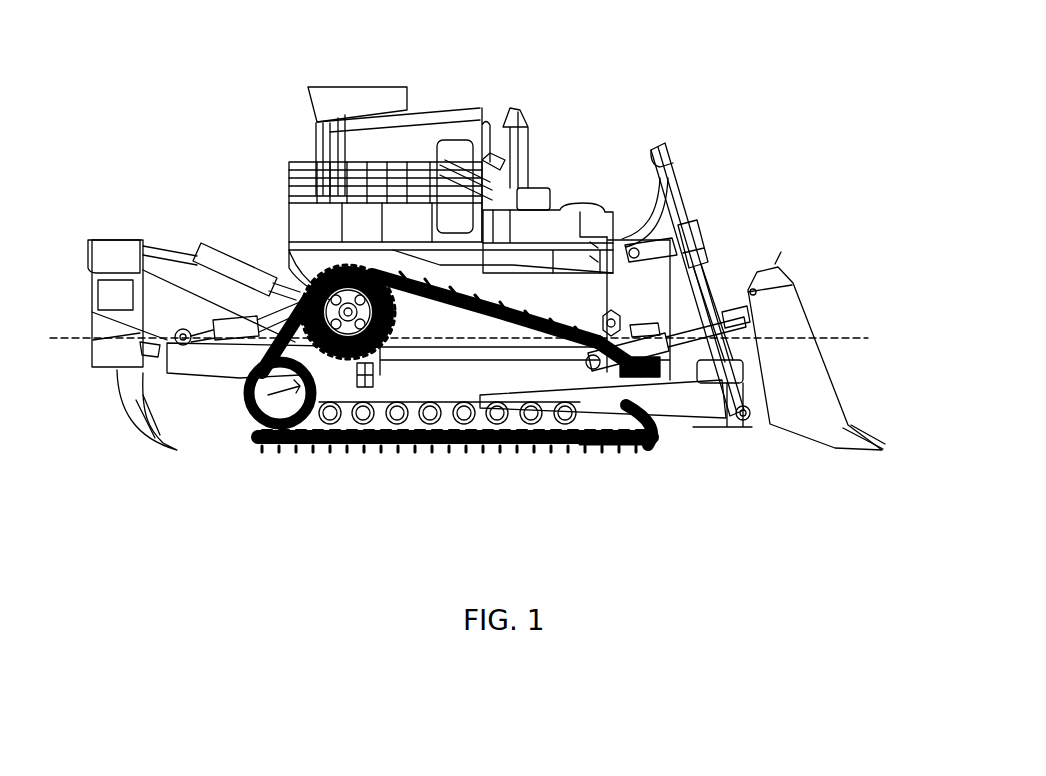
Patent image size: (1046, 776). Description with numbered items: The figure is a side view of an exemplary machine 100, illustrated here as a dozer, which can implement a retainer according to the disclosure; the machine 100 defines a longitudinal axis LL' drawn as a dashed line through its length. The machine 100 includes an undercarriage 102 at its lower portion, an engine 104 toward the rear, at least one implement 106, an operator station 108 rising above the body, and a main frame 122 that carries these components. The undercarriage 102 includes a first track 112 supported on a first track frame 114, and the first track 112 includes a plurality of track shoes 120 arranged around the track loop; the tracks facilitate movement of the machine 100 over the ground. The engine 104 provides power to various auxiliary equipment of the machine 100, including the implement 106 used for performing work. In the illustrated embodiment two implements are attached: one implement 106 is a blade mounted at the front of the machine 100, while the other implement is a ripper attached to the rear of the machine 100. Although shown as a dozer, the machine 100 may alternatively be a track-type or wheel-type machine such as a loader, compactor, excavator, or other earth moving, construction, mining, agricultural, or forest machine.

The machine 100 is at (896, 42).
The undercarriage 102 is at (310, 445).
The engine 104 is at (560, 210).
The implement 106 is at (121, 456).
The operator station 108 is at (313, 133).
The first track 112 is at (500, 443).
The first track frame 114 is at (352, 443).
The track shoes 120 is at (597, 446).
The main frame 122 is at (288, 243).